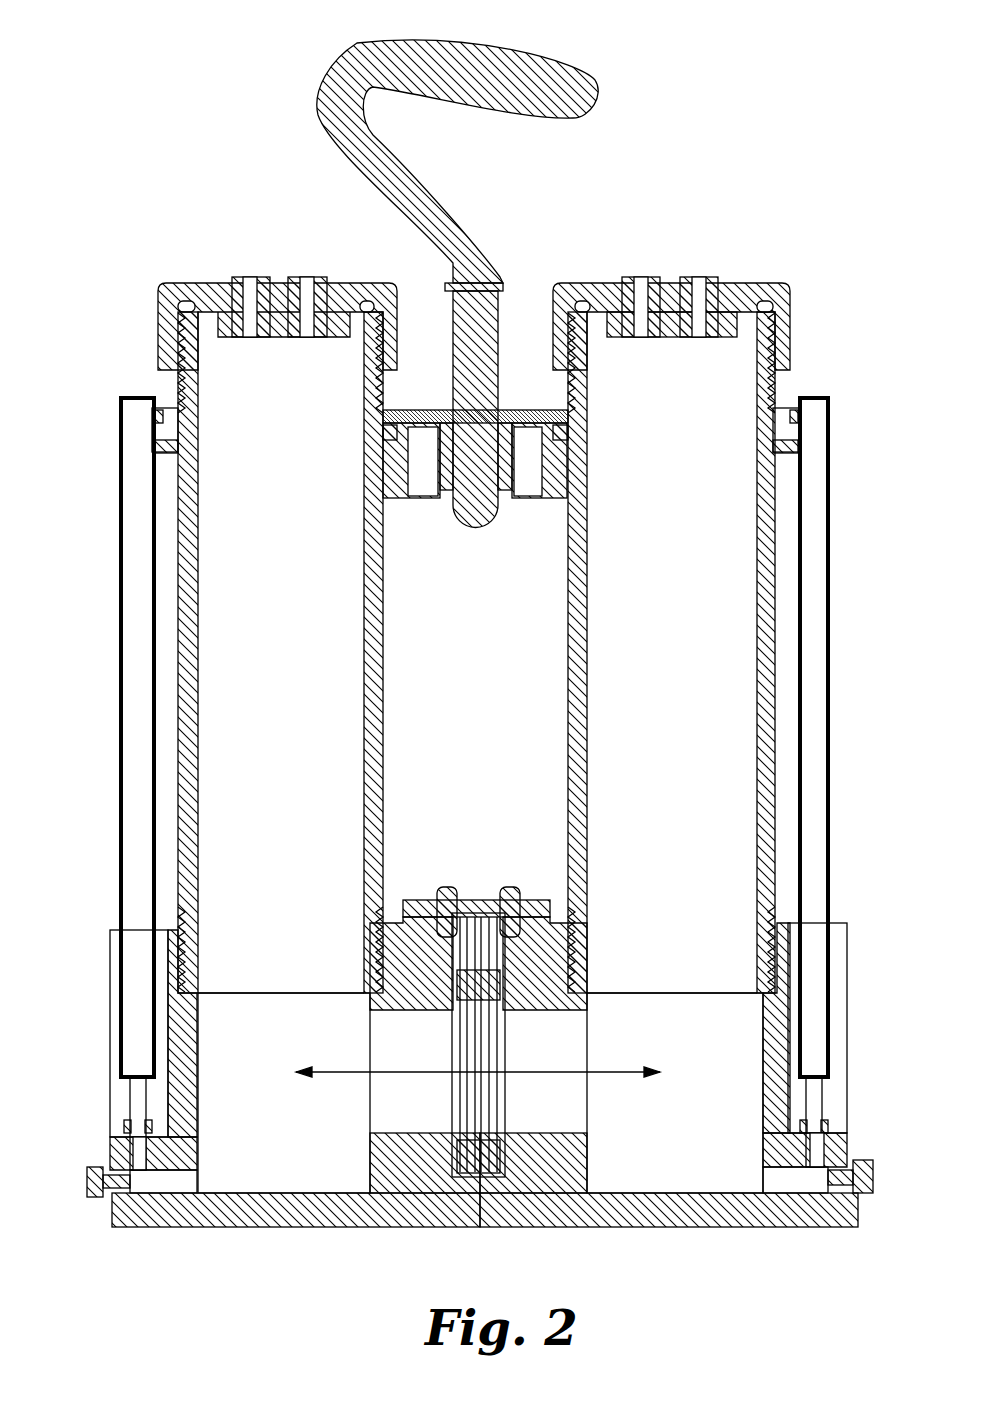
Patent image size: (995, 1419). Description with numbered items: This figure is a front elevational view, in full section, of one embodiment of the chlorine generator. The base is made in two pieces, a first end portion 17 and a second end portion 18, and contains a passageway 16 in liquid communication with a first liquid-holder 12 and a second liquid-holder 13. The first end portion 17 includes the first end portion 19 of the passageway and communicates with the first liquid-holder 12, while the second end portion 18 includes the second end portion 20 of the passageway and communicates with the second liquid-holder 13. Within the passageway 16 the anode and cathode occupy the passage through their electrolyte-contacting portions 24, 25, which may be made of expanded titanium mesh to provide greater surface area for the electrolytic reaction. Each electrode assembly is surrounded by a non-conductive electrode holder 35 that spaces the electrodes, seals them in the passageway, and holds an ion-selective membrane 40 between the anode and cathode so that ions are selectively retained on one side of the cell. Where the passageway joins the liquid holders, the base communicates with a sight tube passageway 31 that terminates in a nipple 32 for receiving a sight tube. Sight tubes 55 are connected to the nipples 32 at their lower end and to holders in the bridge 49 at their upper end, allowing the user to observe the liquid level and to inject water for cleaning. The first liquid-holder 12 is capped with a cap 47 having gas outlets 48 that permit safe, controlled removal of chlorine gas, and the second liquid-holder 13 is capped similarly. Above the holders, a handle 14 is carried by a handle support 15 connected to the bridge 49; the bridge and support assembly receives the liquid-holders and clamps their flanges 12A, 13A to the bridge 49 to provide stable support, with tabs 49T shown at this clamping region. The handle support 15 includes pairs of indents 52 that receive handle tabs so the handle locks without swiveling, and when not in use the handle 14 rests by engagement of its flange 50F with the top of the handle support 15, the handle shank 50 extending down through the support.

The handle 14 is at (537, 60).
The flange 50F is at (505, 280).
The connecting rod 50 is at (500, 320).
The cap 47 is at (775, 286).
The gas outlets 48 is at (700, 278).
The second liquid-holder 13 is at (210, 393).
The first liquid-holder 12 is at (737, 382).
The handle support 15 is at (512, 410).
The tab 49T is at (395, 432).
The flange of second liquid-holder 13A is at (158, 432).
The flange of first liquid-holder 12A is at (802, 420).
The bridge 49 is at (168, 458).
The indents 52 is at (457, 518).
The sight tubes 55 is at (130, 602).
The second end portion of passageway 20 is at (415, 1180).
The first end portion of passageway 19 is at (525, 1160).
The electrolyte-contacting portion of anode 24 is at (490, 1027).
The electrolyte-contacting portion of cathode 25 is at (465, 1050).
The ion-selective membrane 40 is at (492, 1112).
The electrode holder 35 is at (472, 1172).
The passageway 16 is at (590, 1070).
The nipple 32 is at (128, 1110).
The sight tube passageway 31 is at (830, 1175).
The second end portion of base 18 is at (300, 1208).
The first end portion of base 17 is at (735, 1208).